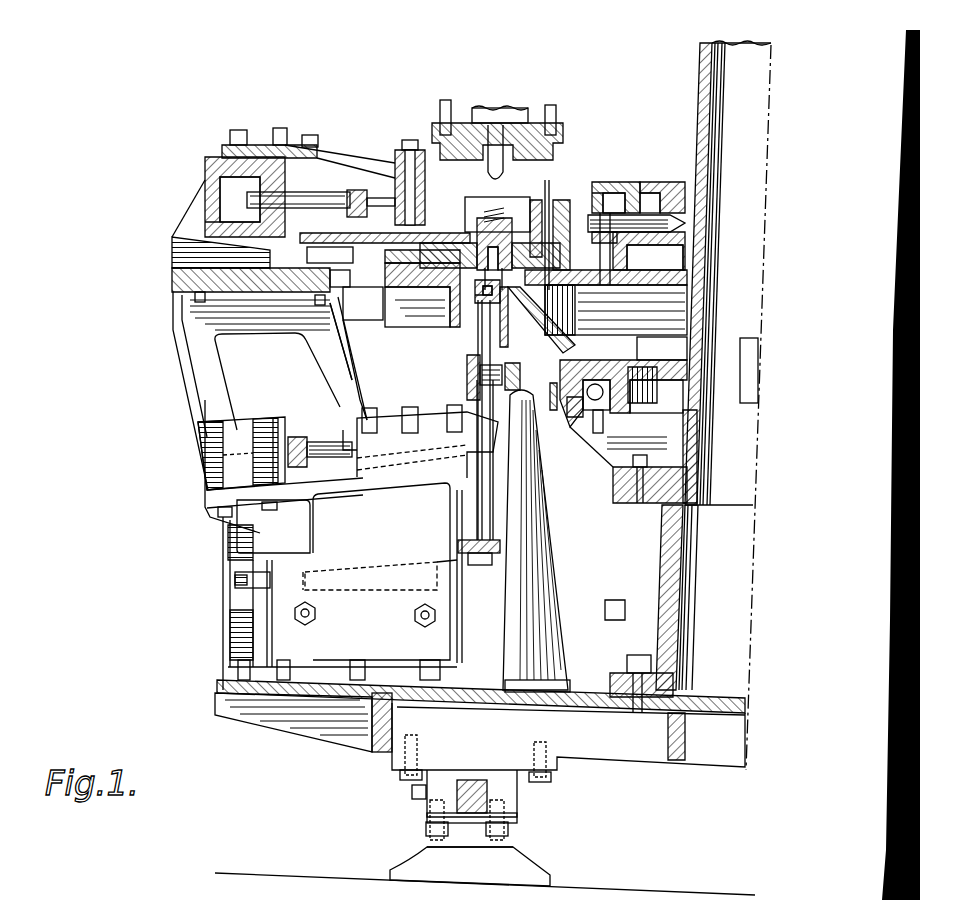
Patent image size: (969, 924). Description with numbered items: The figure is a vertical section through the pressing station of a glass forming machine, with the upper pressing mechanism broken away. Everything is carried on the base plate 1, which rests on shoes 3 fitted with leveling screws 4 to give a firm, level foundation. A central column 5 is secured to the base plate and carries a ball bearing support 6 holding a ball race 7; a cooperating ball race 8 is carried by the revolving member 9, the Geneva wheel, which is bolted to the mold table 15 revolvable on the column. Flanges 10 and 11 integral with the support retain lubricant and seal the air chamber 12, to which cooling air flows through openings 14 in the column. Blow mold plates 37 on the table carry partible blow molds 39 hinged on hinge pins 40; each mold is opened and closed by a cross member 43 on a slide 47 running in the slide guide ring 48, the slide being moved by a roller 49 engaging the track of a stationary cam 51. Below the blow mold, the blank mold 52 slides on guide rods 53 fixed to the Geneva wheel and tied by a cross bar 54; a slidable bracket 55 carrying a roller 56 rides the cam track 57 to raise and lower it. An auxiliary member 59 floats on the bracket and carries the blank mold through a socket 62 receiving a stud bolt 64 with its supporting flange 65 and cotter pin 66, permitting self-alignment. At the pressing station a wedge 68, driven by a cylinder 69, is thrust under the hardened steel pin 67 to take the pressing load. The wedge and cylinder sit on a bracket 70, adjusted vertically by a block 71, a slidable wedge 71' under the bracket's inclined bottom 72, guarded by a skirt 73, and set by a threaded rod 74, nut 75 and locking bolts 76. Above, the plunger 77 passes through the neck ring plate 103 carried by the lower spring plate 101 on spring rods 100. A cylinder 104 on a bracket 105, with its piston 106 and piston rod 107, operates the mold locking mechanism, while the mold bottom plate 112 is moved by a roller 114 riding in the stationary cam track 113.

The base plate 1 is at (216, 691).
The shoes 3 is at (517, 868).
The leveling screws 4 is at (427, 847).
The central column 5 is at (702, 63).
The ball bearing support 6 is at (593, 437).
The ball race 7 is at (577, 420).
The ball race 8 is at (600, 383).
The revolving member (Geneva wheel) 9 is at (557, 353).
The upwardly extending flange 10 is at (612, 392).
The upwardly extending flange 11 is at (580, 396).
The air chamber 12 is at (616, 323).
The openings 14 is at (748, 396).
The mold table 15 is at (378, 315).
The blow mold plates 37 is at (422, 285).
The blow molds 39 is at (517, 207).
The hinge pins 40 is at (549, 205).
The cross member 43 is at (598, 182).
The slide 47 is at (697, 218).
The slide guide ring 48 is at (649, 251).
The roller 49 is at (614, 192).
The stationary cam 51 is at (646, 192).
The blank mold 52 is at (477, 227).
The guide rods 53 is at (495, 420).
The cross bar 54 is at (500, 550).
The slidable bracket 55 is at (472, 362).
The roller 56 is at (514, 365).
The cam track 57 is at (522, 420).
The auxiliary member 59 is at (500, 322).
The socket 62 is at (512, 317).
The stud bolt 64 is at (473, 279).
The supporting flange 65 is at (481, 298).
The cotter pin 66 is at (514, 279).
The hardened steel pin 67 is at (482, 410).
The wedge 68 is at (490, 437).
The cylinder 69 is at (238, 433).
The bracket 70 is at (355, 487).
The block 71 is at (322, 590).
The slidable wedge 71' is at (370, 555).
The inclined bottom 72 is at (457, 560).
The skirt 73 is at (270, 628).
The threaded rod 74 is at (235, 578).
The nut 75 is at (243, 570).
The bolts 76 is at (418, 617).
The plunger 77 is at (504, 170).
The spring rods 100 is at (442, 108).
The lower spring plate 101 is at (566, 130).
The neck ring plate 103 is at (432, 150).
The cylinder 104 is at (207, 182).
The bracket 105 is at (190, 322).
The piston 106 is at (260, 145).
The piston rod 107 is at (287, 198).
The mold bottom plate 112 is at (363, 303).
The stationary cam track 113 is at (311, 279).
The roller 114 is at (330, 257).